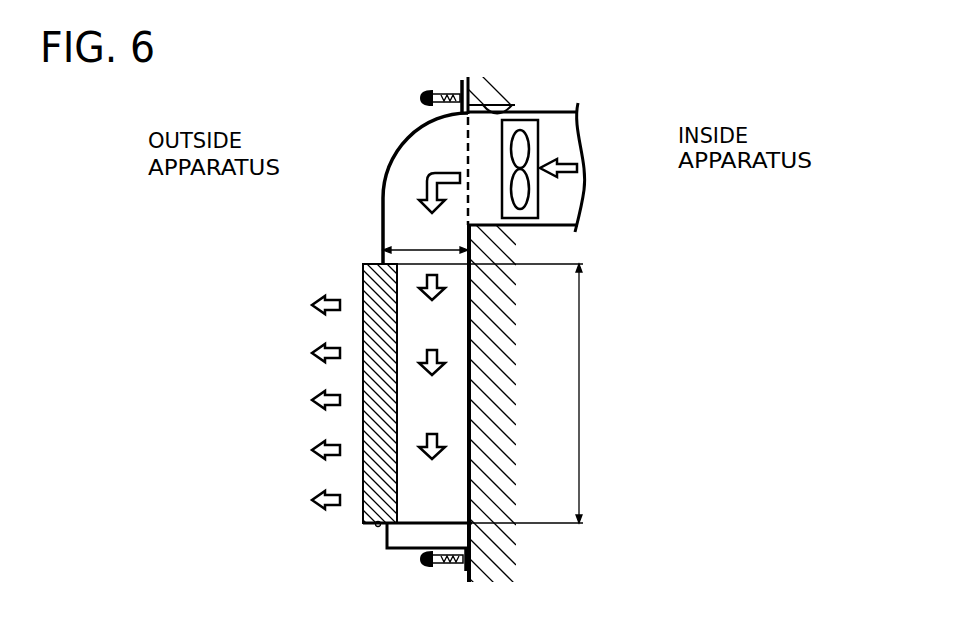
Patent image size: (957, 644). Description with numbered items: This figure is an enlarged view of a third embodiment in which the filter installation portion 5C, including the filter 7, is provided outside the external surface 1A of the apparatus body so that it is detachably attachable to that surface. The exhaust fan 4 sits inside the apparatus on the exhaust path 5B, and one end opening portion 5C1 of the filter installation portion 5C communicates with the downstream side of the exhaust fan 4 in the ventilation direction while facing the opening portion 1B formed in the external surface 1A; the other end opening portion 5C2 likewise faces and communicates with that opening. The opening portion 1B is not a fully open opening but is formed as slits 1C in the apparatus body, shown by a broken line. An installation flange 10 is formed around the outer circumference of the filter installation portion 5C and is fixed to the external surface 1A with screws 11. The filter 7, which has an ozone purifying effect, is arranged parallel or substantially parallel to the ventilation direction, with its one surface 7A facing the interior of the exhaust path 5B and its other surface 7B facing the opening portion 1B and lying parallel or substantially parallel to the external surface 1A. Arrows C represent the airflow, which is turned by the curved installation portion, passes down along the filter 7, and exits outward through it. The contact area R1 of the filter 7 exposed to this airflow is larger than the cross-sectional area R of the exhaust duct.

The external surface 1A is at (471, 318).
The opening portion 1B is at (512, 105).
The slits 1C is at (465, 143).
The exhaust fan 4 is at (539, 195).
The exhaust path 5B is at (570, 138).
The filter installation portion 5C is at (383, 177).
The one end opening portion 5C1 is at (443, 150).
The other end opening portion 5C2 is at (379, 528).
The filter 7 is at (363, 280).
The one surface 7A is at (398, 325).
The other surface 7B is at (363, 325).
The installation flange 10 is at (464, 88).
The screws 11 is at (431, 91).
The arrows C is at (437, 459).
The cross-sectional area R is at (425, 239).
The contact area R1 is at (580, 393).